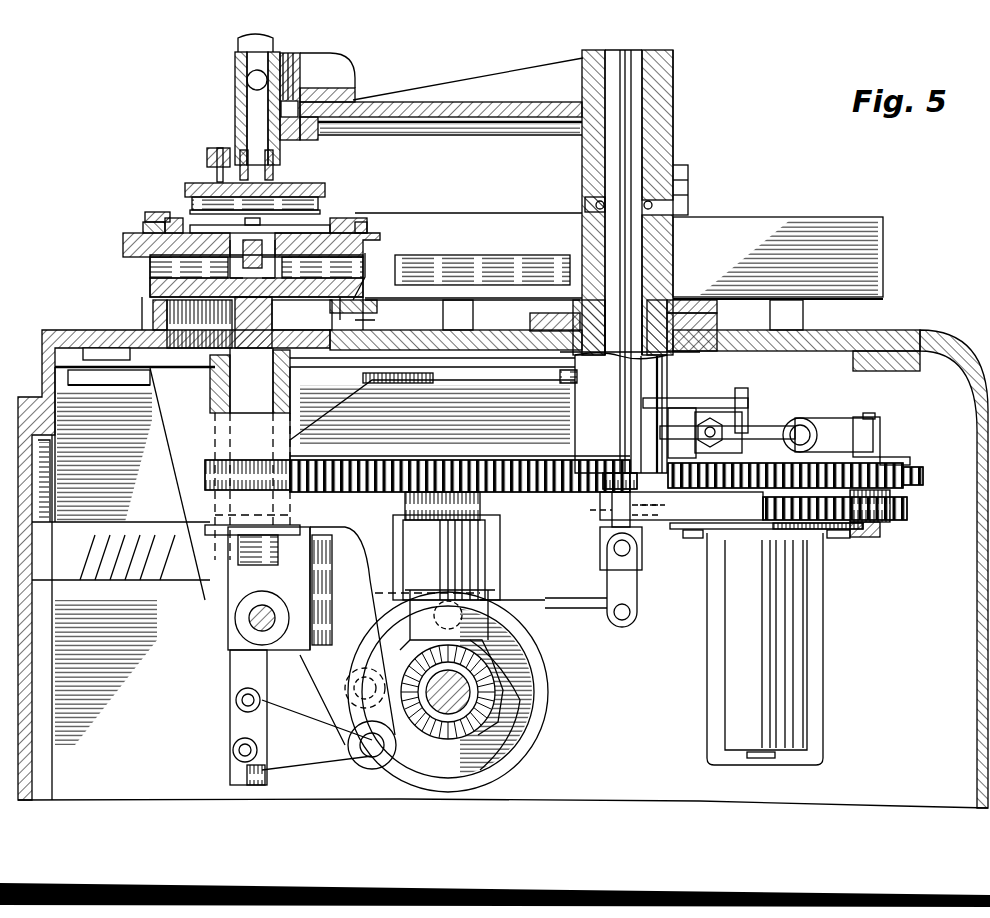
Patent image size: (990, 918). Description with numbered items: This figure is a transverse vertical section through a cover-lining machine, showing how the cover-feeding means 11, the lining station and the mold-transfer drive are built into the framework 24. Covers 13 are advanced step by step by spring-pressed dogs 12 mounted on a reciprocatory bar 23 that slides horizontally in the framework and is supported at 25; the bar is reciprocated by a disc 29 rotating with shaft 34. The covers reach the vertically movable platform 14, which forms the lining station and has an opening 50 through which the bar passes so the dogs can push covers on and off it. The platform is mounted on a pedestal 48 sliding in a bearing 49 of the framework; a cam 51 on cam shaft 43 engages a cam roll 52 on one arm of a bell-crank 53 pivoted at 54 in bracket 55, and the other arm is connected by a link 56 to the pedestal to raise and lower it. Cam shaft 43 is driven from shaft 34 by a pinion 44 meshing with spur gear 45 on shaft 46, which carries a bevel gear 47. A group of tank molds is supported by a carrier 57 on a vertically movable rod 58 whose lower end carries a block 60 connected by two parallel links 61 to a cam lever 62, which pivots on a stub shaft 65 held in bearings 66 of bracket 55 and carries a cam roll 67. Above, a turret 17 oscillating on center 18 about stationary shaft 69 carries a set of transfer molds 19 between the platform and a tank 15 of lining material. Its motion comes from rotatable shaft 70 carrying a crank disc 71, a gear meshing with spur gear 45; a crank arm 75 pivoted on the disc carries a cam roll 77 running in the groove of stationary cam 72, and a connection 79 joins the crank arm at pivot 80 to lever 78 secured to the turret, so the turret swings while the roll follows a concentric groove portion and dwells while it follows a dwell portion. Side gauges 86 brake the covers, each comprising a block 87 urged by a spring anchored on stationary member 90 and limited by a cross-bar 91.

The cover-feeding means 11 is at (226, 265).
The dogs 12 is at (258, 220).
The covers 13 is at (330, 216).
The platform 14 is at (114, 243).
The tank 15 is at (500, 213).
The turret 17 is at (483, 82).
The center 18 is at (684, 55).
The set of transfer molds 19 is at (302, 183).
The reciprocatory bar 23 is at (234, 302).
The framework 24 is at (42, 376).
The bar support 25 is at (273, 310).
The disc 29 is at (428, 386).
The shaft 34 is at (232, 773).
The cam shaft 43 is at (470, 700).
The pinion 44 is at (222, 482).
The spur gear 45 is at (536, 464).
The shaft 46 is at (482, 500).
The bevel gear 47 is at (500, 652).
The pedestal 48 is at (560, 722).
The bearing 49 is at (212, 383).
The opening 50 is at (284, 262).
The cam 51 is at (548, 692).
The cam roll 52 is at (356, 642).
The bell-crank 53 is at (302, 757).
The pivot 54 is at (376, 762).
The bracket 55 is at (347, 636).
The link 56 is at (234, 715).
The carrier 57 is at (688, 173).
The rod 58 is at (612, 505).
The block 60 is at (643, 560).
The parallel links 61 is at (637, 594).
The cam lever 62 is at (570, 588).
The stub shaft 65 is at (245, 618).
The bearing 66 is at (265, 592).
The cam roll 67 is at (438, 592).
The stationary shaft 69 is at (670, 126).
The rotatable shaft 70 is at (750, 504).
The crank disc 71 is at (923, 476).
The stationary cam 72 is at (912, 511).
The crank arm 75 is at (890, 460).
The cam roll 77 is at (866, 531).
The lever 78 is at (750, 400).
The connection 79 is at (780, 434).
The pivot 80 is at (863, 416).
The side gauges 86 is at (365, 216).
The block 87 is at (355, 214).
The stationary member 90 is at (368, 225).
The cross-bar 91 is at (160, 212).